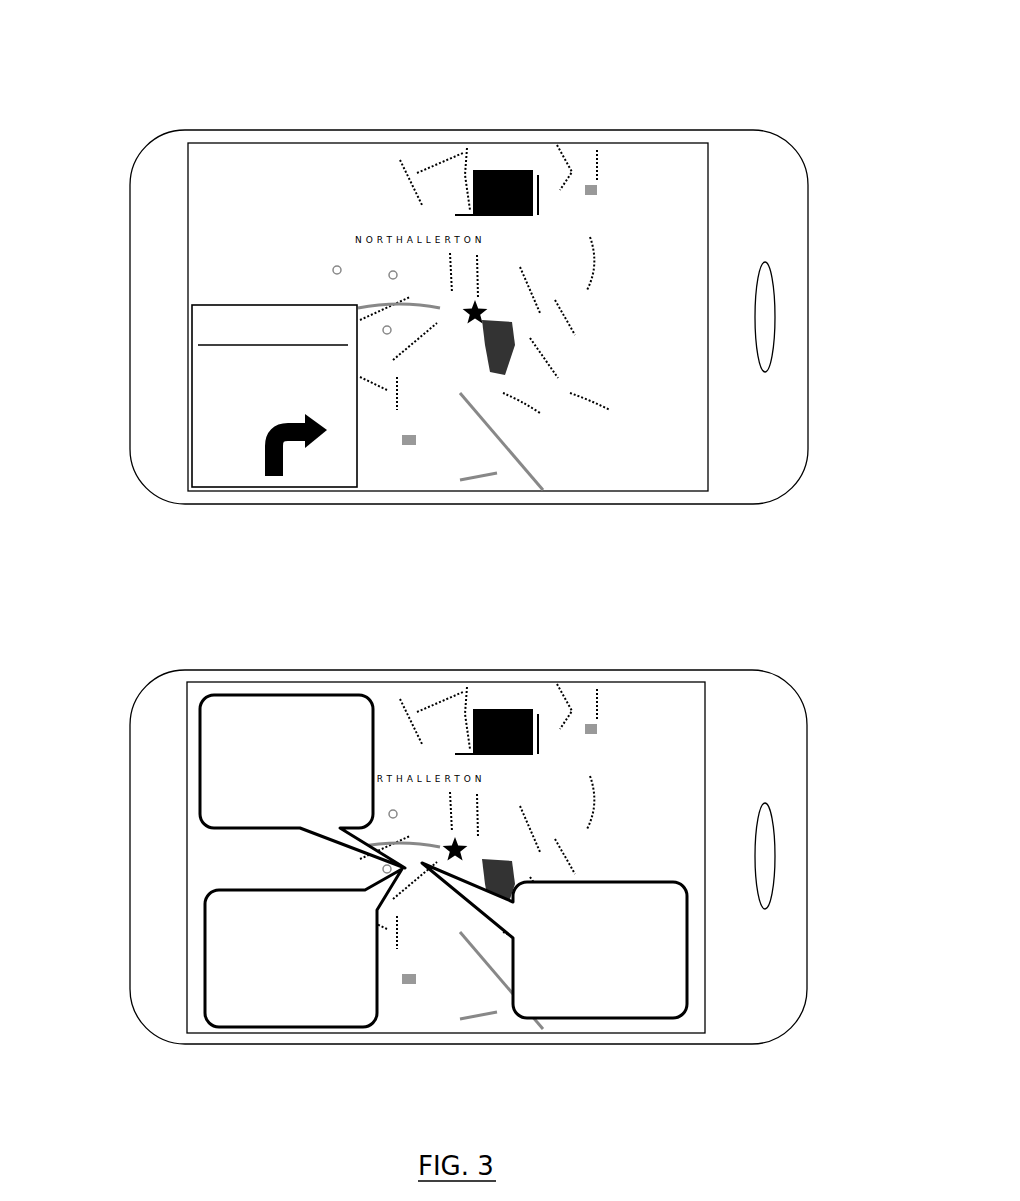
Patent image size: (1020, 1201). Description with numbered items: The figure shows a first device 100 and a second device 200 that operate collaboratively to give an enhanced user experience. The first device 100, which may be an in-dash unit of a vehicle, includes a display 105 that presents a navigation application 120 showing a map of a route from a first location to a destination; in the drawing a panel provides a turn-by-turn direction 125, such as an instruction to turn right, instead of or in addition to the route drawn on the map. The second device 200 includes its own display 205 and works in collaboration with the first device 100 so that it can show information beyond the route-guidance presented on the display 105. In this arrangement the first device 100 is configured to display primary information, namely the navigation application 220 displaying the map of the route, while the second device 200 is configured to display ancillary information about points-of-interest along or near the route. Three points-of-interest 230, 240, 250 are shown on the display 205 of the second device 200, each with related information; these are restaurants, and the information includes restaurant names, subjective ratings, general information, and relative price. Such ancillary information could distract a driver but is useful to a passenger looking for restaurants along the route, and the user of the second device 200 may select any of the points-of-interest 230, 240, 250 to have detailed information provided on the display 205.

The first device 100 is at (718, 130).
The display 105 is at (448, 247).
The navigation application 120 is at (505, 172).
The direction 125 is at (202, 380).
The second device 200 is at (717, 670).
The display 205 is at (446, 788).
The navigation application 220 is at (500, 715).
The point-of-interest 230 is at (235, 707).
The point-of-interest 240 is at (282, 1012).
The point-of-interest 250 is at (615, 1003).